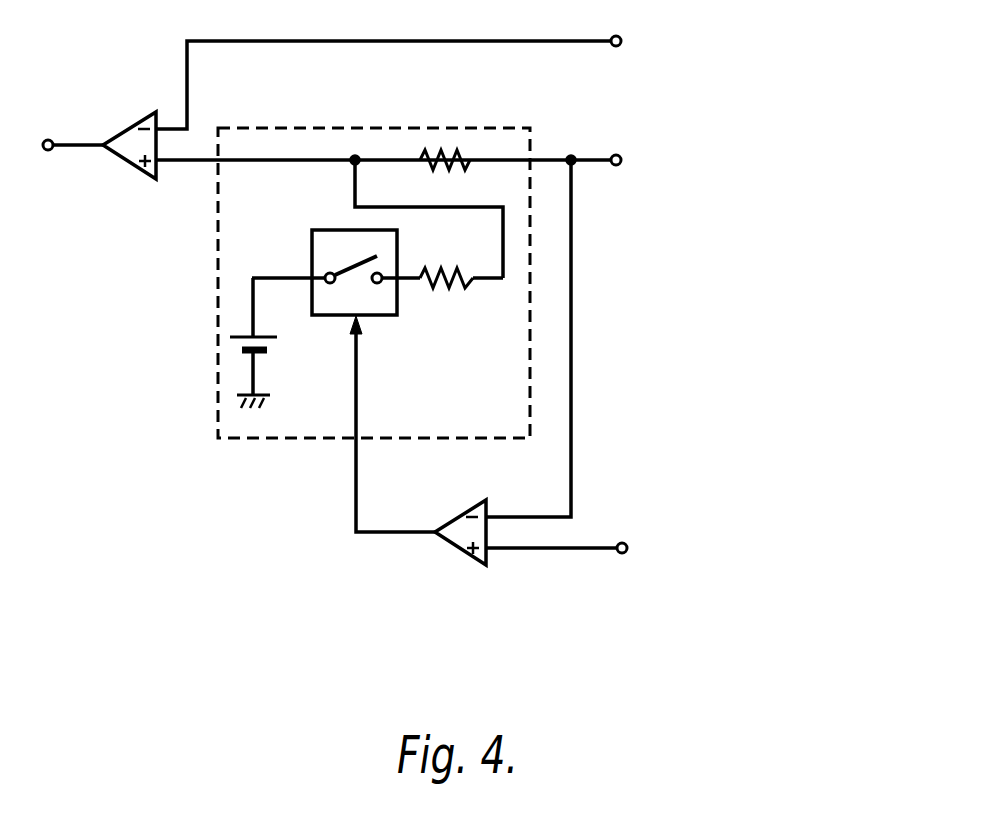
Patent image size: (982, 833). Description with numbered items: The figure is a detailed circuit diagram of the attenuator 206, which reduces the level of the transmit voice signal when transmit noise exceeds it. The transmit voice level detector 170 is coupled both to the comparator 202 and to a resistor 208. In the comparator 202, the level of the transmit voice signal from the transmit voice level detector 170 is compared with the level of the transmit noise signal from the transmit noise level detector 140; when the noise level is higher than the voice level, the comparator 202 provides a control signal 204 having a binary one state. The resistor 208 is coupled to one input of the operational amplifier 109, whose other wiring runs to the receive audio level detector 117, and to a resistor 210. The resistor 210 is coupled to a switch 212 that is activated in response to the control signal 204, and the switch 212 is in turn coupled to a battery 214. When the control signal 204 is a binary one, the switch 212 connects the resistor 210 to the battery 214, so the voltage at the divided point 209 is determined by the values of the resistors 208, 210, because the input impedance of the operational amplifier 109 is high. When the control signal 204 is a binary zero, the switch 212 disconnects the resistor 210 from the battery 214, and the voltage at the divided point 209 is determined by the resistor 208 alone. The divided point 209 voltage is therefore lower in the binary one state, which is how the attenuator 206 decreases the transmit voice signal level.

The operational amplifier 109 is at (123, 128).
The receive audio level detector 117 is at (514, 69).
The transmit voice level detector 170 is at (514, 162).
The transmit noise level detector 140 is at (682, 550).
The comparator 202 is at (455, 517).
The control signal 204 is at (366, 460).
The attenuator 206 is at (455, 128).
The resistor 208 is at (452, 167).
The divided point 209 is at (354, 165).
The resistor 210 is at (453, 286).
The switch 212 is at (378, 316).
The battery 214 is at (268, 345).